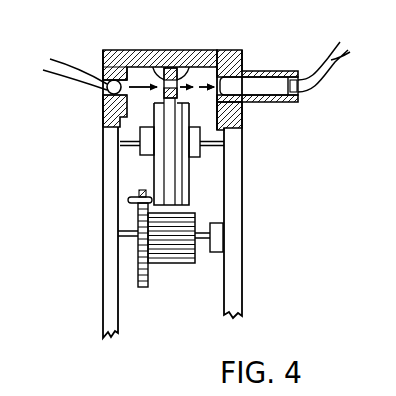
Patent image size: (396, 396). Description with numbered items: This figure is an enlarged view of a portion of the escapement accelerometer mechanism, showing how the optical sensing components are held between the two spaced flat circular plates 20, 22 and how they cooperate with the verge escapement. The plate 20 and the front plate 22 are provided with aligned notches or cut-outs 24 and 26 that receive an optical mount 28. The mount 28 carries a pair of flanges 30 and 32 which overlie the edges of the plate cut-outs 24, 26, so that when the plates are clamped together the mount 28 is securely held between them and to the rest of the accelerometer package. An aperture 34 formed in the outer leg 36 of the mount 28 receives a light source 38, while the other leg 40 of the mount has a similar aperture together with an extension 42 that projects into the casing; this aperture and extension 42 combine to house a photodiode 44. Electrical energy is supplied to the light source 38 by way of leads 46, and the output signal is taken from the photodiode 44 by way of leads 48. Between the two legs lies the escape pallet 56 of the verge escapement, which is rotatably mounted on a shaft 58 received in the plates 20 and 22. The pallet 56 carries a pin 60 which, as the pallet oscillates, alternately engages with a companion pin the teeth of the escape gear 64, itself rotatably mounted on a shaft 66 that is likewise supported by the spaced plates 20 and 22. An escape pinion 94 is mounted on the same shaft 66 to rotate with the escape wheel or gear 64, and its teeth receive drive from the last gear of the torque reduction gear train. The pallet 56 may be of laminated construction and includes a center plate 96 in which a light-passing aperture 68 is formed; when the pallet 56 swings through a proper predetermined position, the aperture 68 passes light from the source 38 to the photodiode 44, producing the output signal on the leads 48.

The flat circular plate 20 is at (233, 262).
The front plate 22 is at (110, 250).
The notch or cut-out 24 is at (110, 116).
The notch or cut-out 26 is at (235, 116).
The optical mount 28 is at (169, 60).
The flange 30 is at (128, 123).
The flange 32 is at (217, 122).
The aperture 34 is at (105, 95).
The outer leg 36 is at (108, 63).
The light source 38 is at (107, 78).
The other leg 40 is at (233, 71).
The extension 42 is at (269, 103).
The photodiode 44 is at (273, 85).
The leads 46 is at (62, 78).
The leads 48 is at (335, 64).
The escape pallet 56 is at (172, 153).
The shaft 58 is at (212, 146).
The pin 60 is at (128, 200).
The escape gear 64 is at (141, 289).
The shaft 66 is at (204, 222).
The light aperture 68 is at (181, 70).
The escape pinion 94 is at (176, 250).
The center plate 96 is at (154, 65).